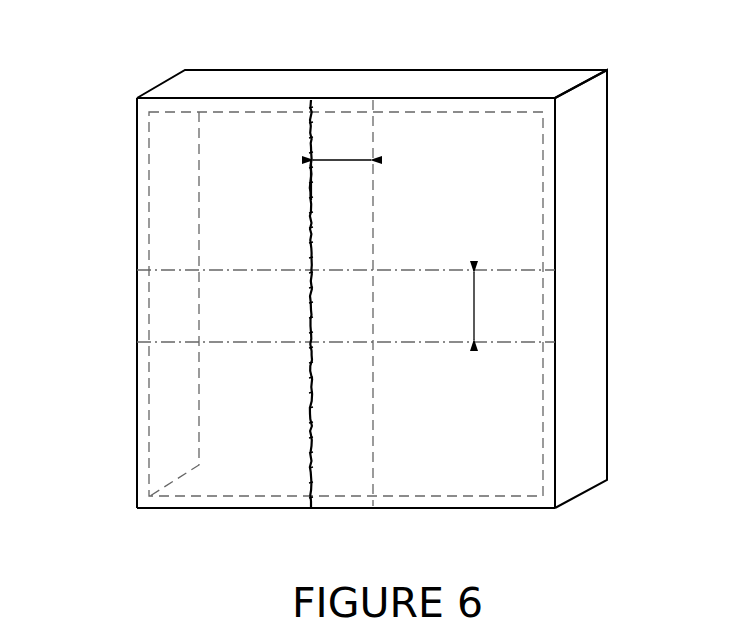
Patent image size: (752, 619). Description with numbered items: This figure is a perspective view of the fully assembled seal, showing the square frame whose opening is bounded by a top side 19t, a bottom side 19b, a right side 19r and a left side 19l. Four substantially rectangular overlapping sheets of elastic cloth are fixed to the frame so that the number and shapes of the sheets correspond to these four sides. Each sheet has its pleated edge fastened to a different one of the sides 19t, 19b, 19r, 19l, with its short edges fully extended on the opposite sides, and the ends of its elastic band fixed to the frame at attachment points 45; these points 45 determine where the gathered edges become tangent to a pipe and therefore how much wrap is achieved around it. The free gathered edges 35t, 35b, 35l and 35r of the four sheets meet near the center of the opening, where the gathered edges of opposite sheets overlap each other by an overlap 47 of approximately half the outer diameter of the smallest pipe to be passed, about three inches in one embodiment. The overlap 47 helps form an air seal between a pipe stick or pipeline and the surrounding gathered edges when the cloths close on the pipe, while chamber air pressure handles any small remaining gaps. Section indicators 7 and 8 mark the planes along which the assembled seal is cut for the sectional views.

The top side of the frame 19t is at (205, 82).
The bottom side of the frame 19b is at (260, 487).
The right side of the frame 19r is at (175, 325).
The left side of the frame 19l is at (585, 422).
The gathered edge of the left sheet of cloth 35l is at (310, 182).
The gathered edge of the right sheet of cloth 35r is at (372, 232).
The gathered edge of the bottom sheet of cloth 35b is at (282, 268).
The gathered edge of the top sheet of cloth 35t is at (283, 342).
The attachment points 45 is at (308, 108).
The overlap 47 is at (338, 158).
The section line 7- 7 is at (326, 60).
The section line 8- 8 is at (128, 290).